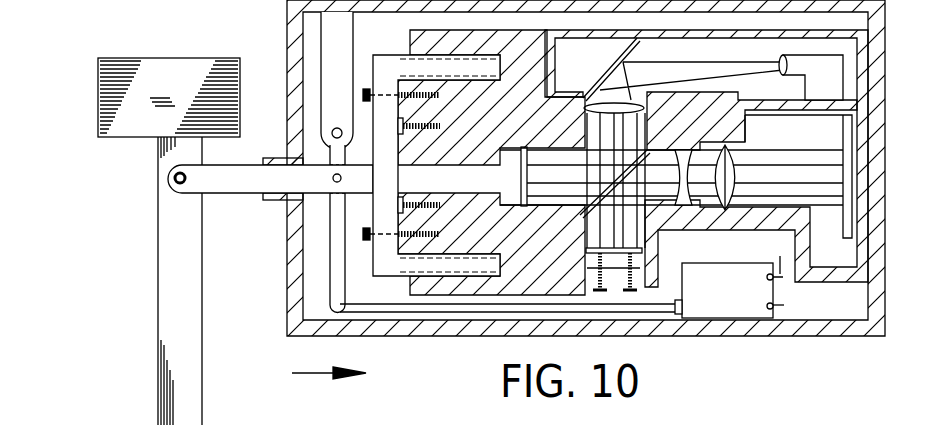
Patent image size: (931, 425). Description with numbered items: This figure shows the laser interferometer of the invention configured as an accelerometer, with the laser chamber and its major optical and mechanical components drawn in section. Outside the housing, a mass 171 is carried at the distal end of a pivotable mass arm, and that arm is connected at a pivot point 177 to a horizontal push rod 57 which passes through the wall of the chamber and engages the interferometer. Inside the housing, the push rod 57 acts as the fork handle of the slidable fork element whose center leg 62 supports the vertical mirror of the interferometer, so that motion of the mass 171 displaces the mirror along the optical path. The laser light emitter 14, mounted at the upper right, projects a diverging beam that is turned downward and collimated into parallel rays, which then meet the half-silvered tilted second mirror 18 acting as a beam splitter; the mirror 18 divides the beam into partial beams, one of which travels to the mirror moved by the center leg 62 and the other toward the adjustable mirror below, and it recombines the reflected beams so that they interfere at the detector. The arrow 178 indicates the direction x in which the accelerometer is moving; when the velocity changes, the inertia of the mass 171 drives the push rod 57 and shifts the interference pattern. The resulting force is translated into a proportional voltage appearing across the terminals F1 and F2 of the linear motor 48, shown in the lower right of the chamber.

The mass 171 is at (98, 82).
The pivot point 177 is at (168, 178).
The push rod 57 is at (240, 183).
The center leg 62 is at (460, 187).
The half-silvered tilted second mirror 18 is at (582, 206).
The laser light emitter 14 is at (830, 72).
The linear motor 48 is at (740, 300).
The terminal F1 is at (772, 258).
The terminal F2 is at (784, 305).
The arrow 178 is at (313, 372).